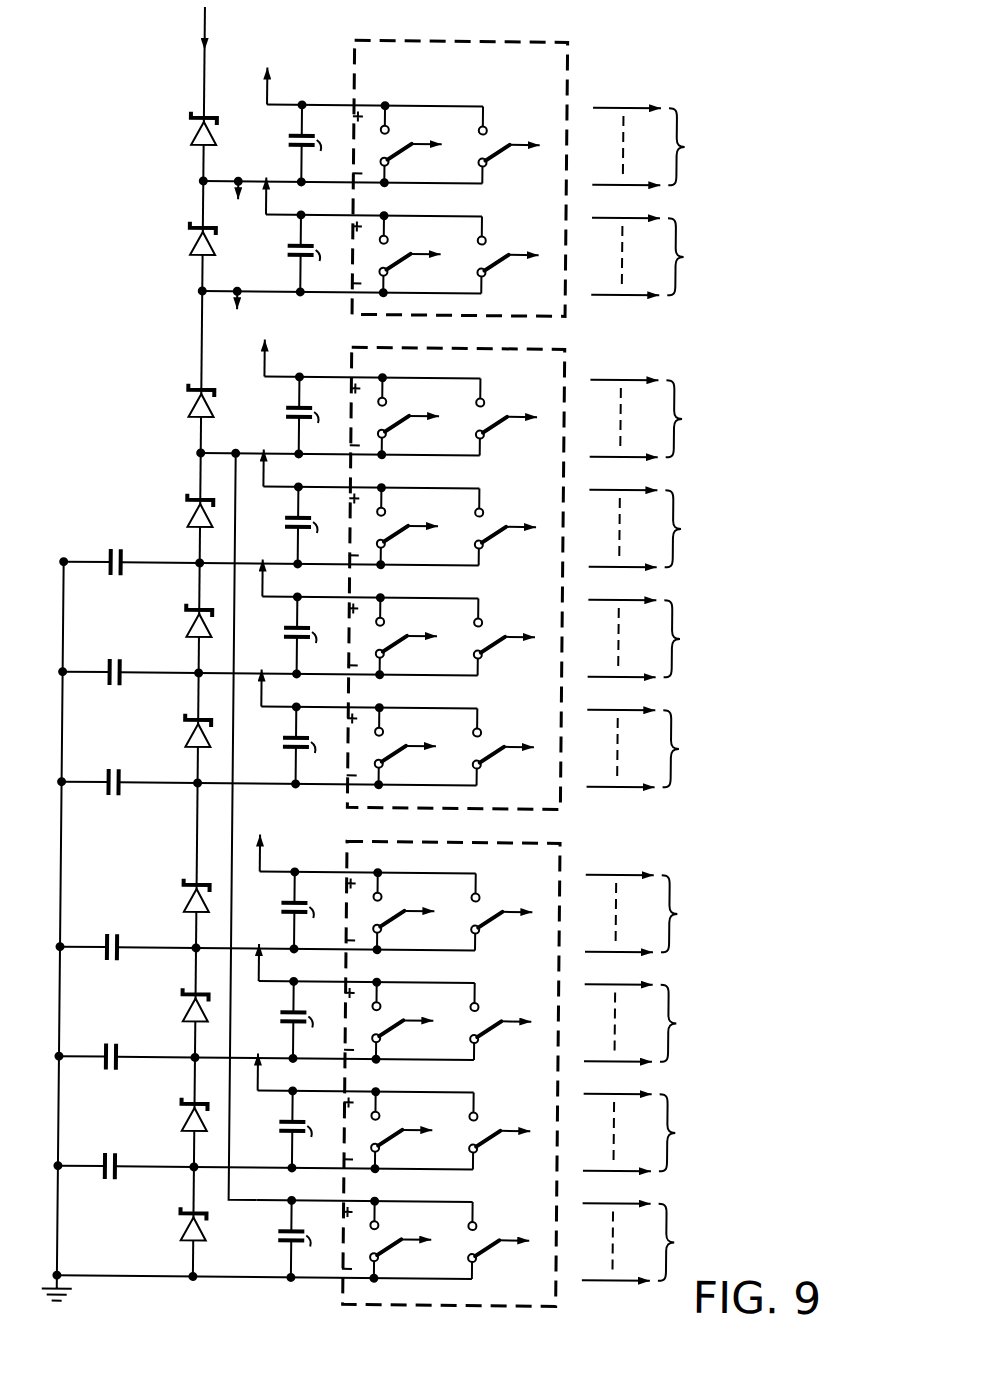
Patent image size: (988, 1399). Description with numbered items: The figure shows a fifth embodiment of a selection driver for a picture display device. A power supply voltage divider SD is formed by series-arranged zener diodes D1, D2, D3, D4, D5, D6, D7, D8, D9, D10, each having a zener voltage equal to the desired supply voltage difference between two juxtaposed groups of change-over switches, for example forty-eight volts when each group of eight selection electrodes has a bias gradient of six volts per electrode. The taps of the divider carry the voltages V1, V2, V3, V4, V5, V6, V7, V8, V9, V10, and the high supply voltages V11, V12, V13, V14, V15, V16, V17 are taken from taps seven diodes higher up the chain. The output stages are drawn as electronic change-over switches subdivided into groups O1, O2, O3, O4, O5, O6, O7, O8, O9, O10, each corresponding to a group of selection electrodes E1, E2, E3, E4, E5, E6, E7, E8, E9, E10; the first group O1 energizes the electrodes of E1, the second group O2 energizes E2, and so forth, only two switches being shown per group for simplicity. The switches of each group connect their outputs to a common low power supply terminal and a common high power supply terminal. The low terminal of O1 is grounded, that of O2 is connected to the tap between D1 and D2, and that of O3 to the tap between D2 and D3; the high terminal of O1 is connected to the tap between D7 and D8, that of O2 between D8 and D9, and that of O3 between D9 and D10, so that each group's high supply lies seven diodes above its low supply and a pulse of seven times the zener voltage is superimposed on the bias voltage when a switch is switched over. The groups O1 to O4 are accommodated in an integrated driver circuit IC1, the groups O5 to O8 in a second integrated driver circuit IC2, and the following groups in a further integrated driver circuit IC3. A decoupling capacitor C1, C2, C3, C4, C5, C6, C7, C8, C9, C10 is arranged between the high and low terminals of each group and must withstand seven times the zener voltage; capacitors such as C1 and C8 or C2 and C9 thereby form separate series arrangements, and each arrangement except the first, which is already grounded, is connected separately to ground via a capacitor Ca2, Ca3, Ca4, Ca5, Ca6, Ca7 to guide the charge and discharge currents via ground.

The power supply voltage divider SD is at (179, 642).
The integrated driver circuit IC1 is at (568, 1296).
The second integrated driver circuit IC2 is at (568, 804).
The third integrated driver circuit IC3 is at (568, 311).
The zener diode D1 is at (193, 1224).
The zener diode D2 is at (193, 1115).
The zener diode D3 is at (193, 1006).
The zener diode D4 is at (193, 896).
The zener diode D5 is at (193, 731).
The zener diode D6 is at (193, 621).
The zener diode D7 is at (193, 511).
The zener diode D8 is at (193, 401).
The zener diode D9 is at (193, 239).
The zener diode D10 is at (193, 129).
The node voltage V1 is at (204, 1274).
The node voltage V2 is at (204, 1164).
The node voltage V3 is at (204, 1054).
The node voltage V4 is at (204, 945).
The node voltage V5 is at (204, 780).
The node voltage V6 is at (204, 670).
The node voltage V7 is at (204, 560).
The node voltage V8 is at (201, 451).
The node voltage V9 is at (201, 289).
The node voltage V10 is at (201, 179).
The supply voltage V11 is at (255, 873).
The supply voltage V12 is at (257, 708).
The supply voltage V13 is at (258, 598).
The supply voltage V14 is at (259, 488).
The supply voltage V15 is at (260, 378).
The supply voltage V16 is at (262, 216).
The supply voltage V17 is at (263, 106).
The decoupling capacitor C1 is at (298, 1239).
The decoupling capacitor C2 is at (271, 730).
The decoupling capacitor C3 is at (272, 620).
The decoupling capacitor C4 is at (301, 910).
The decoupling capacitor C5 is at (303, 745).
The decoupling capacitor C6 is at (304, 635).
The decoupling capacitor C7 is at (305, 525).
The decoupling capacitor C8 is at (306, 415).
The decoupling capacitor C9 is at (307, 253).
The decoupling capacitor C10 is at (313, 143).
The capacitor Ca2 is at (121, 1147).
The capacitor Ca3 is at (121, 1038).
The capacitor Ca4 is at (121, 928).
The capacitor Ca5 is at (121, 763).
The capacitor Ca6 is at (121, 653).
The capacitor Ca7 is at (121, 543).
The first group of change-over switches O1 is at (393, 1240).
The second group of change-over switches O2 is at (394, 1130).
The group of change-over switches O3 is at (395, 1021).
The group of change-over switches O4 is at (396, 911).
The group of change-over switches O5 is at (398, 746).
The group of change-over switches O6 is at (399, 636).
The group of change-over switches O7 is at (400, 526).
The group of change-over switches O8 is at (401, 416).
The group of change-over switches O9 is at (402, 254).
The group of change-over switches O10 is at (403, 144).
The first group of selection electrodes E1 is at (648, 1242).
The second group of selection electrodes E2 is at (649, 1133).
The group of selection electrodes E3 is at (650, 1023).
The group of selection electrodes E4 is at (651, 914).
The group of selection electrodes E5 is at (653, 749).
The group of selection electrodes E6 is at (654, 639).
The group of selection electrodes E7 is at (655, 529).
The group of selection electrodes E8 is at (656, 419).
The group of selection electrodes E9 is at (657, 257).
The group of selection electrodes E10 is at (665, 147).